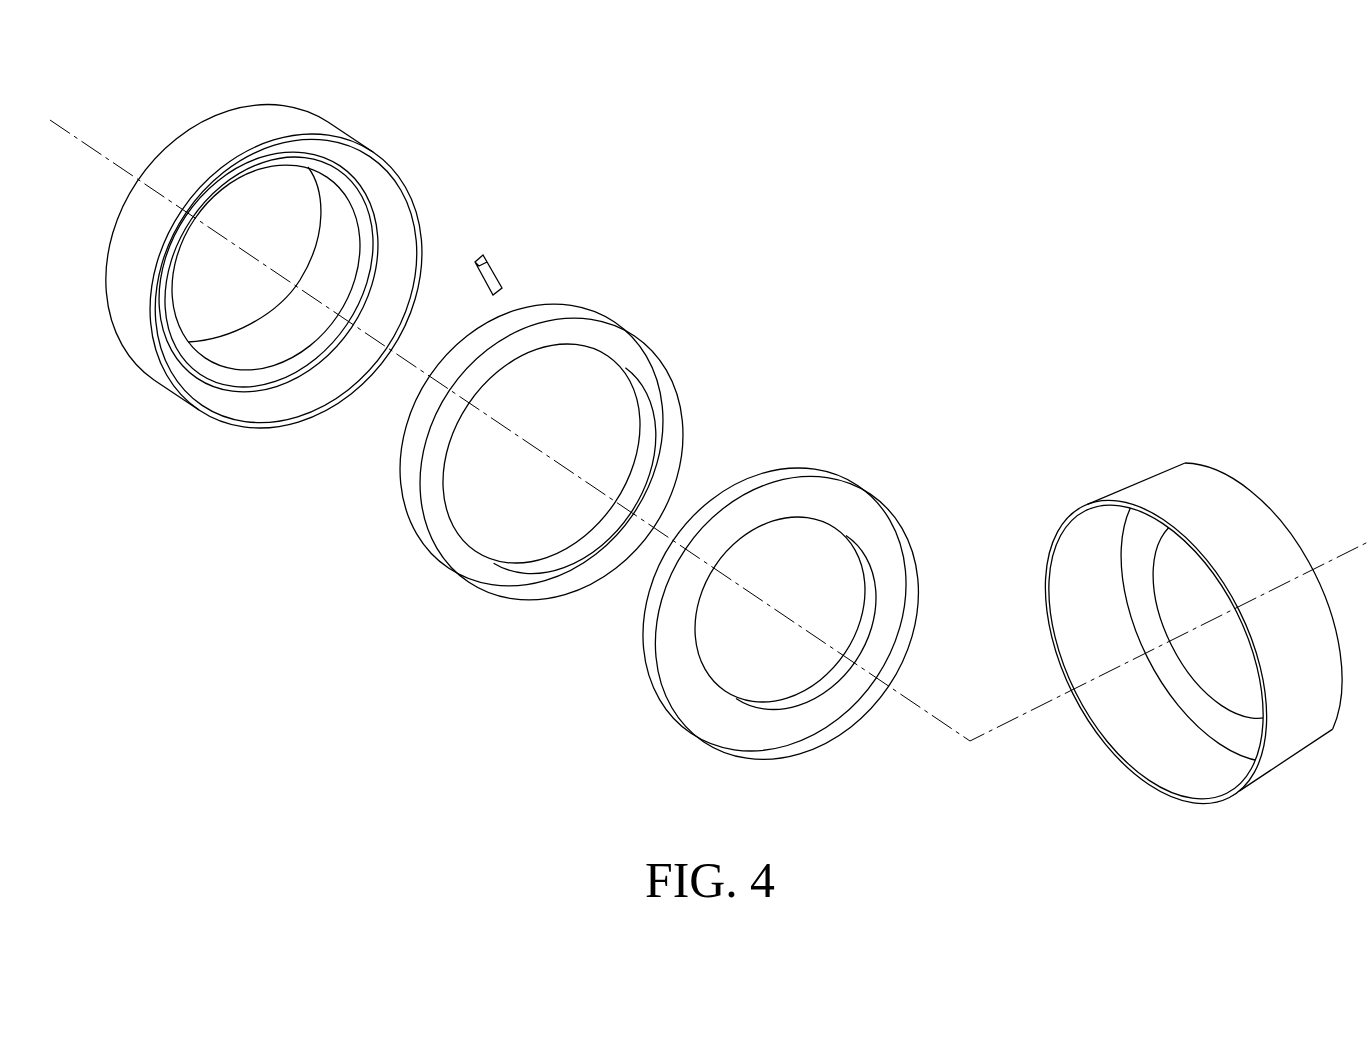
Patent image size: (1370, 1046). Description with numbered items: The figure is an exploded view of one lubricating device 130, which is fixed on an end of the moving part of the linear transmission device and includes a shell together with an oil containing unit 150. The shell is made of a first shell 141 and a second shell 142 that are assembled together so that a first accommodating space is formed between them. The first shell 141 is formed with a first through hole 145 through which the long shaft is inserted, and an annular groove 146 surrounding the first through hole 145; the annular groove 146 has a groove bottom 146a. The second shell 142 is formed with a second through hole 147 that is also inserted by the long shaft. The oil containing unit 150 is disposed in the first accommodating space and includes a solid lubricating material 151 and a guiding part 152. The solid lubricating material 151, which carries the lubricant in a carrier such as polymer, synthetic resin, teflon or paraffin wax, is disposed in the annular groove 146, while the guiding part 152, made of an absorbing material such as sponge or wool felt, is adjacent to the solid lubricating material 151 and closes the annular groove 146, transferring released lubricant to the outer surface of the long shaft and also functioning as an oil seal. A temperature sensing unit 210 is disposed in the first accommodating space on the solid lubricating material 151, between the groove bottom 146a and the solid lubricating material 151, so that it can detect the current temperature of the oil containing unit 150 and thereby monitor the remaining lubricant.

The lubricating device 130 is at (188, 60).
The first shell 141 is at (293, 121).
The second shell 142 is at (1177, 488).
The first through hole 145 is at (243, 310).
The annular groove 146 is at (418, 253).
The groove bottom 146a is at (357, 173).
The second through hole 147 is at (1163, 609).
The oil containing unit 150 is at (832, 380).
The solid lubricating material 151 is at (653, 378).
The guiding part 152 is at (793, 490).
The temperature sensing unit 210 is at (497, 276).